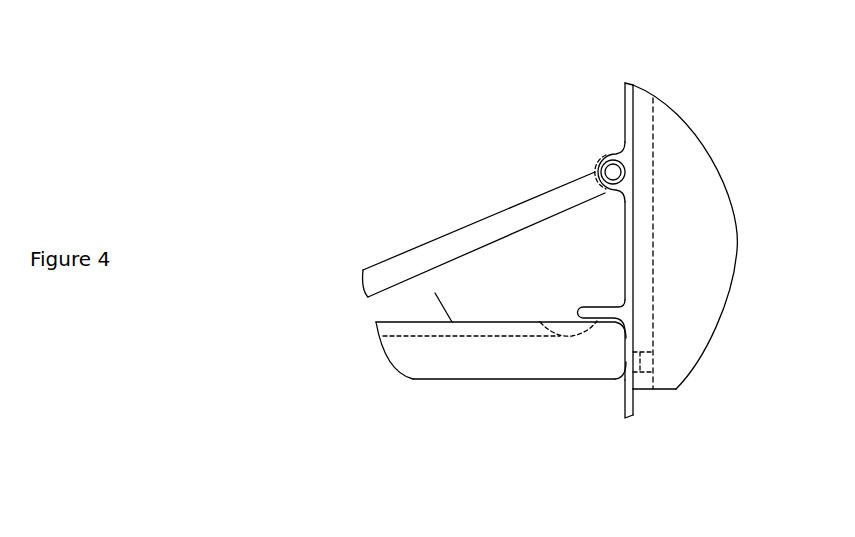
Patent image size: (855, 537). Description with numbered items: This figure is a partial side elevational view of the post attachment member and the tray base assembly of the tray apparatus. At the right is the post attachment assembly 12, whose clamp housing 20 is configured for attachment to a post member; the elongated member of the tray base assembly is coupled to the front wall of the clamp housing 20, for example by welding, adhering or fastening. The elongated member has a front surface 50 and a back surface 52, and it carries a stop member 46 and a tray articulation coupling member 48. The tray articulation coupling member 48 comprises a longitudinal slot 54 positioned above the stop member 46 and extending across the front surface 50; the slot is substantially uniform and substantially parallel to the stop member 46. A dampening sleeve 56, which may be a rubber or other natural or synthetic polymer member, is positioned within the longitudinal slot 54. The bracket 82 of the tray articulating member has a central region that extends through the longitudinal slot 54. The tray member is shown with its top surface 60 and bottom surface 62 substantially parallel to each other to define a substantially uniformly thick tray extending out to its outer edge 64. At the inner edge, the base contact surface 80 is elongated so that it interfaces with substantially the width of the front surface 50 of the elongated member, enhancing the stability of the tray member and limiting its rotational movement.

The post attachment assembly 12 is at (677, 132).
The clamp housing 20 is at (623, 227).
The stop member 46 is at (603, 303).
The tray articulation coupling member 48 is at (610, 143).
The front surface 50 is at (625, 390).
The back surface 52 is at (640, 400).
The longitudinal slot 54 is at (587, 157).
The dampening sleeve 56 is at (603, 148).
The top surface 60 is at (418, 360).
The bottom surface 62 is at (435, 293).
The outer edge 64 is at (467, 378).
The base contact surface 80 is at (630, 335).
The bracket 82 is at (480, 215).